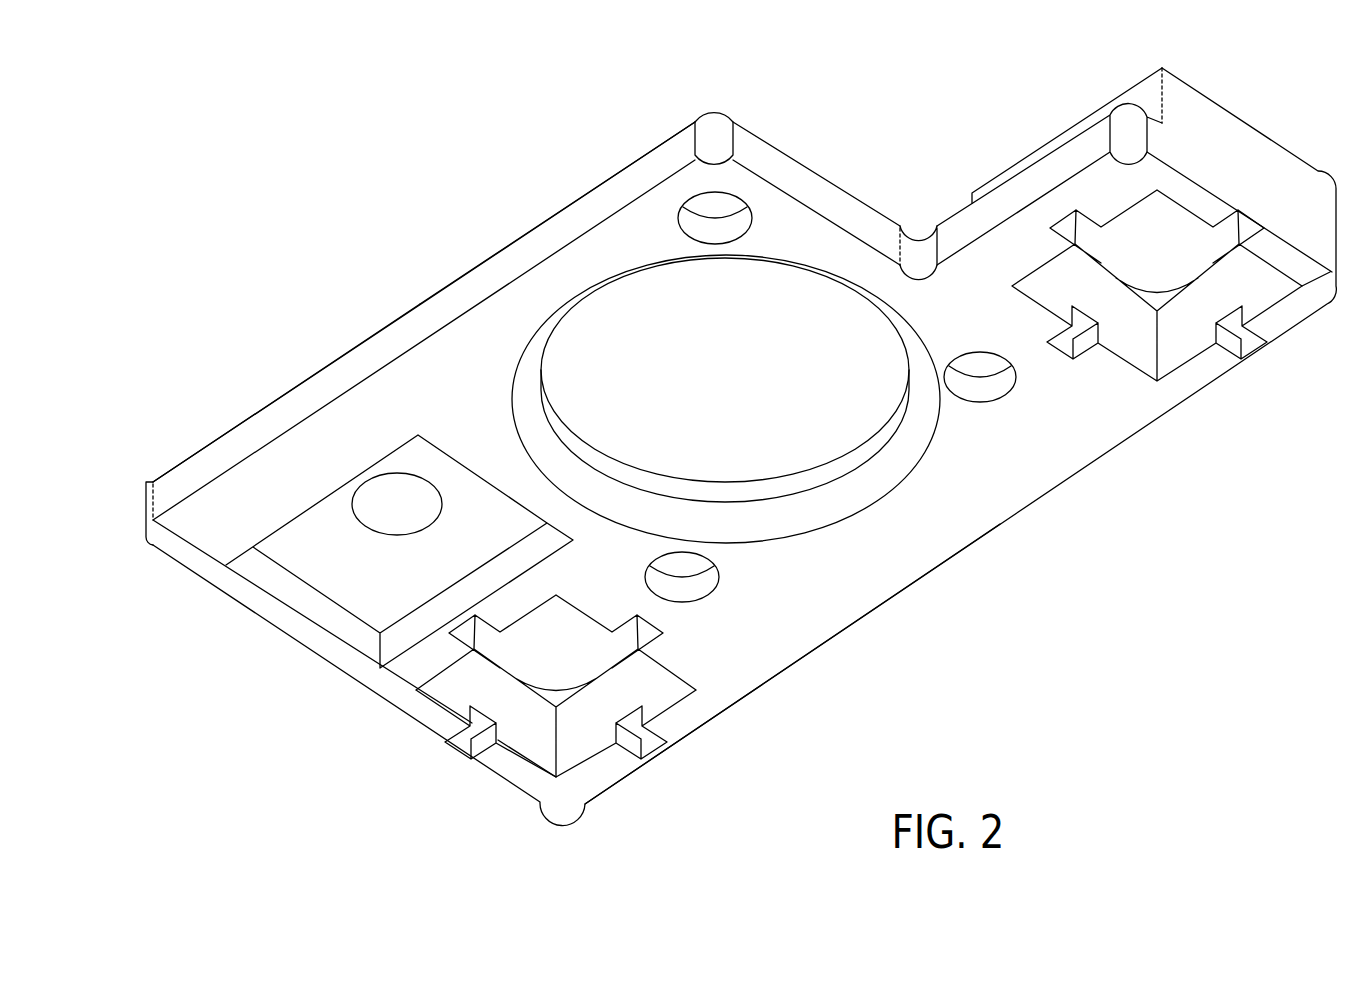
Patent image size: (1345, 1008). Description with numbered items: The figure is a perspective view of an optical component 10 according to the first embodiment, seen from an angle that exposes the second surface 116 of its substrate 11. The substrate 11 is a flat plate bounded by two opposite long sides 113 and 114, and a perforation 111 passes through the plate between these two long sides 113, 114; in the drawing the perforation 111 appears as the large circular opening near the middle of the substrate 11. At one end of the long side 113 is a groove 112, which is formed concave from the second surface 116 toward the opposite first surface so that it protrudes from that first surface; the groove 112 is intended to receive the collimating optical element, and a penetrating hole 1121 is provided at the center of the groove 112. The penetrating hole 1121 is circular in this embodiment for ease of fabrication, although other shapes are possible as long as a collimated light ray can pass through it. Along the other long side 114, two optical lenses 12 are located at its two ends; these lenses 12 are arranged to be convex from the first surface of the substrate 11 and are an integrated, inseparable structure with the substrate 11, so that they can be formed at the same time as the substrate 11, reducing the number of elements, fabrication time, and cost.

The optical component 10 is at (741, 466).
The substrate 11 is at (792, 227).
The perforation 111 is at (802, 480).
The groove 112 is at (330, 560).
The penetrating hole 1121 is at (398, 505).
The long side 113 is at (287, 418).
The long side 114 is at (810, 660).
The second surface 116 is at (455, 365).
The optical lens 12 is at (551, 647).